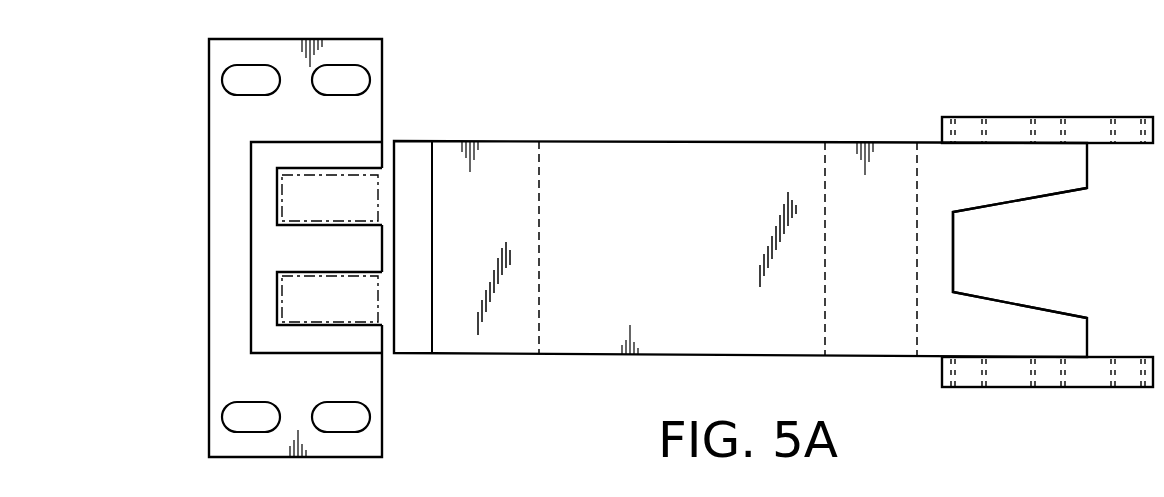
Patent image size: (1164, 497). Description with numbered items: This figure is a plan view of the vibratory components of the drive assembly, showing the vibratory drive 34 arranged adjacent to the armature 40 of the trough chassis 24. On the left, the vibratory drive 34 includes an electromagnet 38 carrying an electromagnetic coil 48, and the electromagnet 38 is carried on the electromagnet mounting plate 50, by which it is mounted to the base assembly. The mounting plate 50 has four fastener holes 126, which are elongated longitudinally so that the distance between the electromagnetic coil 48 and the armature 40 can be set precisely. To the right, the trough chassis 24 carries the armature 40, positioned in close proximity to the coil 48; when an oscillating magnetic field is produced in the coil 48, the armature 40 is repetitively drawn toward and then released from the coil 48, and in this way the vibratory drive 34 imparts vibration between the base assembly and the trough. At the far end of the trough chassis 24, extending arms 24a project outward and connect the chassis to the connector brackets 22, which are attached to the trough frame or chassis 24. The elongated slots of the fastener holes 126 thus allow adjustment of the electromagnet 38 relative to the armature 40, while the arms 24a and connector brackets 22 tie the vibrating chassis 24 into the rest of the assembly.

The vibratory drive 34 is at (190, 80).
The mounting bracket 50 is at (293, 37).
The fastener holes 126 is at (345, 95).
The electromagnet 38 is at (337, 261).
The electromagnetic coil 48 is at (280, 203).
The trough chassis 24 is at (618, 140).
The armature 40 is at (418, 148).
The extending arms 24a is at (1043, 178).
The connector brackets 22 is at (1070, 117).